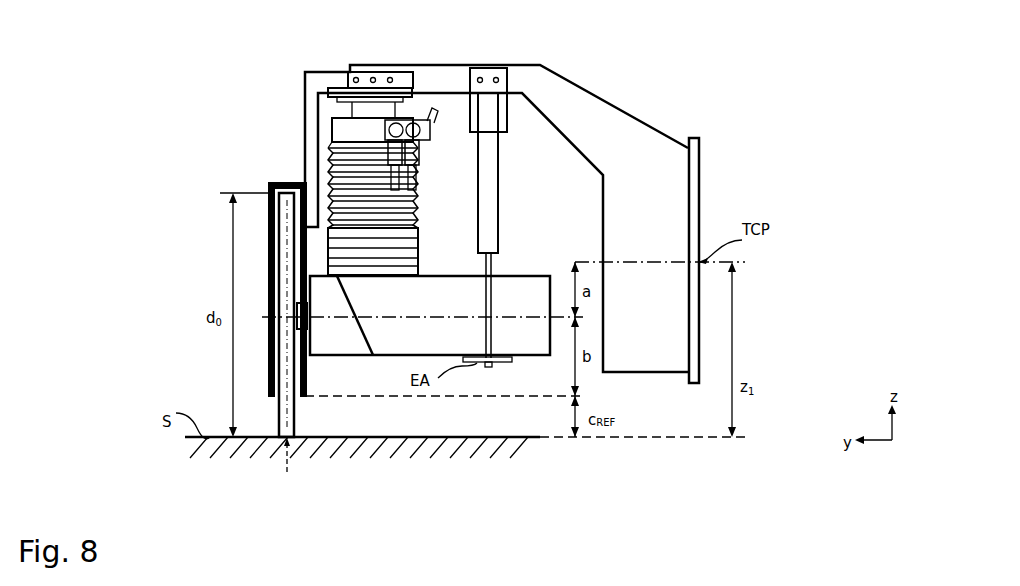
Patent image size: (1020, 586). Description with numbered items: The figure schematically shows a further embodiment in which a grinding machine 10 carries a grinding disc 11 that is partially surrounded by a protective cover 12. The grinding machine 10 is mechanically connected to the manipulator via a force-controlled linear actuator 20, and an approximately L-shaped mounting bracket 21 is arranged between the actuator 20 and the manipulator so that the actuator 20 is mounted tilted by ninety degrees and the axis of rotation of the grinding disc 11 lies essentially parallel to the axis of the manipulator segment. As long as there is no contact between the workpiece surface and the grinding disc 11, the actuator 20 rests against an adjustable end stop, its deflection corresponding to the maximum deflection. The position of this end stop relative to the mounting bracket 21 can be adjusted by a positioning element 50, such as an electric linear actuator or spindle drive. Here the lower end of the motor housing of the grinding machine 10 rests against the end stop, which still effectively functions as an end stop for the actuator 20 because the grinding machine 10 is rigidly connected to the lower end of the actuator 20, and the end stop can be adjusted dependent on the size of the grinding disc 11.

The grinding machine 10 is at (508, 292).
The grinding disc 11 is at (293, 433).
The protective cover 12 is at (270, 183).
The actuator 20 is at (414, 188).
The mounting bracket 21 is at (598, 127).
The positioning element 50 is at (488, 223).